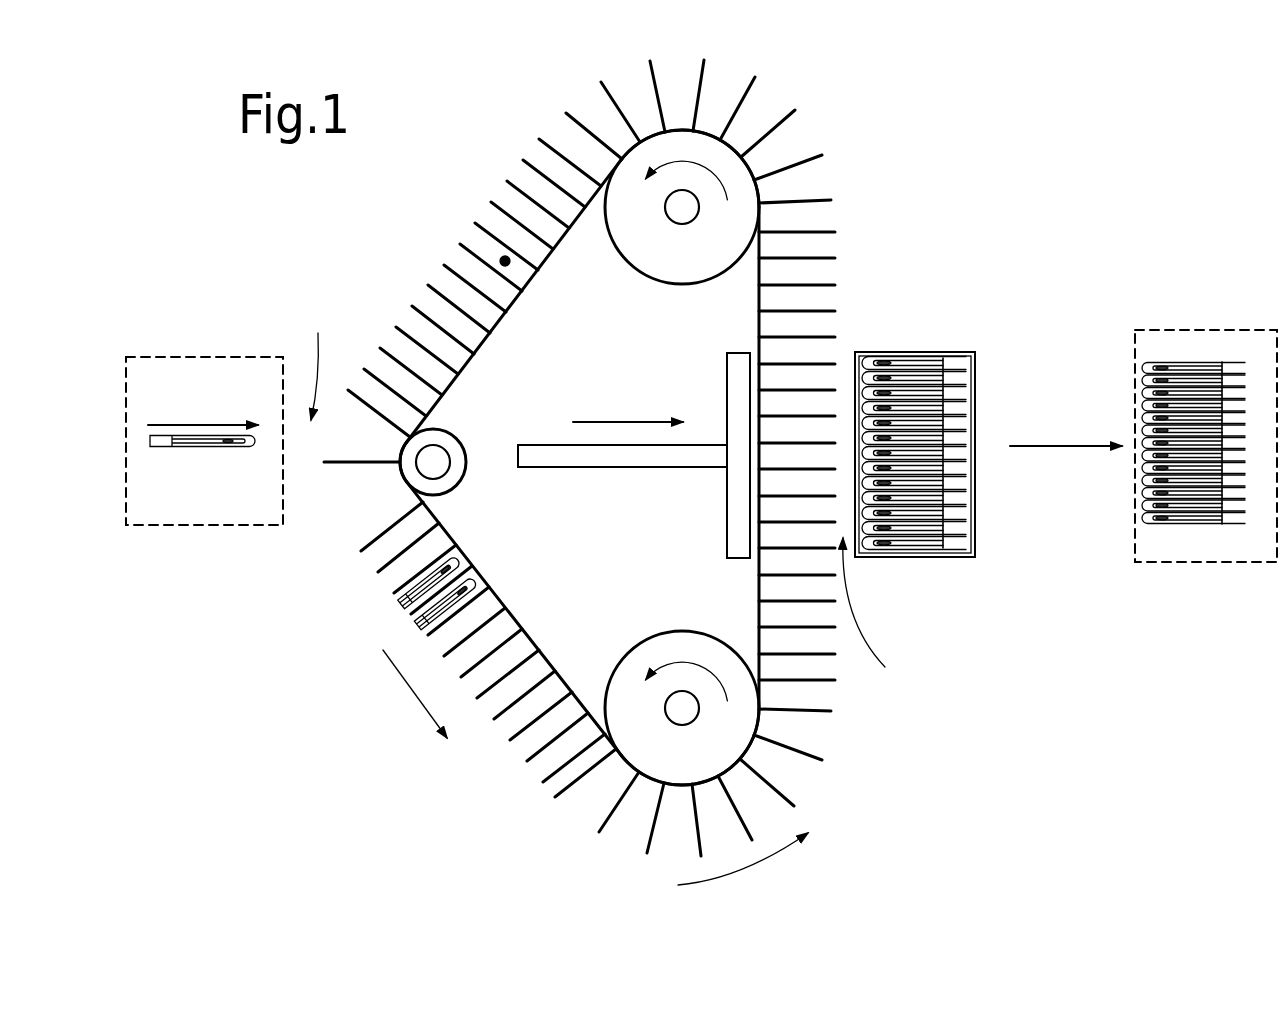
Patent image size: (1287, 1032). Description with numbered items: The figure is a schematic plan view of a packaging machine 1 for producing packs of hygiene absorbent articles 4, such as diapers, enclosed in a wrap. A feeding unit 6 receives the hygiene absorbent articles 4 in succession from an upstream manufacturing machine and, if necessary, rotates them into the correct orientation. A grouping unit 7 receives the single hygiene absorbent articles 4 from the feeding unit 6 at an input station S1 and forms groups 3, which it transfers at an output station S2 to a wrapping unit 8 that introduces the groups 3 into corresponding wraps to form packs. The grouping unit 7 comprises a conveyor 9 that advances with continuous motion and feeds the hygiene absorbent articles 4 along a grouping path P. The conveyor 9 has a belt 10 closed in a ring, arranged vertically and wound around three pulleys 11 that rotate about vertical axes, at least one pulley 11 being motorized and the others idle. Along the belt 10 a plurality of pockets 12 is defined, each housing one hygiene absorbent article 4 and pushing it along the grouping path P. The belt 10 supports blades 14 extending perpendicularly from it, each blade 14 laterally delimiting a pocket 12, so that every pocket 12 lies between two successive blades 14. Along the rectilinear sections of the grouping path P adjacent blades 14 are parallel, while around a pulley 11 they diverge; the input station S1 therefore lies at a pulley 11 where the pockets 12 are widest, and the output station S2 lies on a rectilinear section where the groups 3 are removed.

The packaging machine 1 is at (1043, 754).
The group 3 is at (922, 305).
The hygiene absorbent article 4 is at (198, 447).
The feeding unit 6 is at (165, 312).
The grouping unit 7 is at (445, 137).
The wrapping unit 8 is at (1248, 278).
The conveyor 9 is at (475, 775).
The belt 10 is at (497, 330).
The pulley 11 is at (673, 257).
The pocket 12 is at (500, 258).
The blade 14 is at (797, 113).
The input station S1 is at (319, 362).
The output station S2 is at (879, 617).
The grouping path P is at (405, 690).